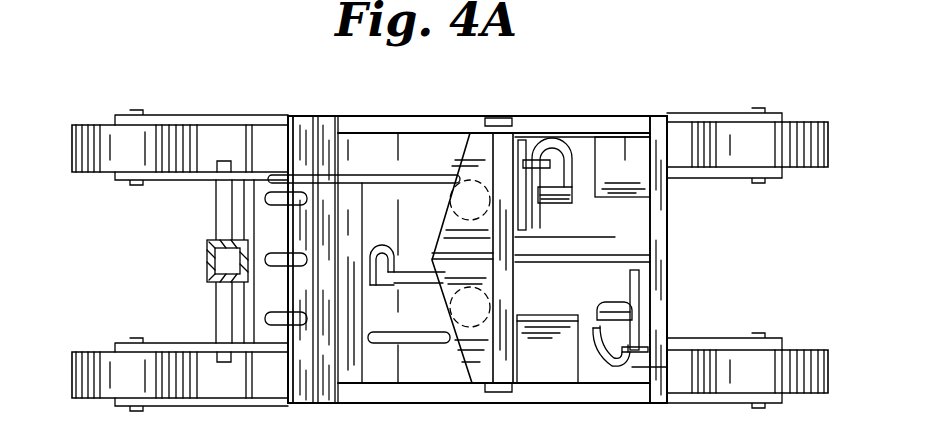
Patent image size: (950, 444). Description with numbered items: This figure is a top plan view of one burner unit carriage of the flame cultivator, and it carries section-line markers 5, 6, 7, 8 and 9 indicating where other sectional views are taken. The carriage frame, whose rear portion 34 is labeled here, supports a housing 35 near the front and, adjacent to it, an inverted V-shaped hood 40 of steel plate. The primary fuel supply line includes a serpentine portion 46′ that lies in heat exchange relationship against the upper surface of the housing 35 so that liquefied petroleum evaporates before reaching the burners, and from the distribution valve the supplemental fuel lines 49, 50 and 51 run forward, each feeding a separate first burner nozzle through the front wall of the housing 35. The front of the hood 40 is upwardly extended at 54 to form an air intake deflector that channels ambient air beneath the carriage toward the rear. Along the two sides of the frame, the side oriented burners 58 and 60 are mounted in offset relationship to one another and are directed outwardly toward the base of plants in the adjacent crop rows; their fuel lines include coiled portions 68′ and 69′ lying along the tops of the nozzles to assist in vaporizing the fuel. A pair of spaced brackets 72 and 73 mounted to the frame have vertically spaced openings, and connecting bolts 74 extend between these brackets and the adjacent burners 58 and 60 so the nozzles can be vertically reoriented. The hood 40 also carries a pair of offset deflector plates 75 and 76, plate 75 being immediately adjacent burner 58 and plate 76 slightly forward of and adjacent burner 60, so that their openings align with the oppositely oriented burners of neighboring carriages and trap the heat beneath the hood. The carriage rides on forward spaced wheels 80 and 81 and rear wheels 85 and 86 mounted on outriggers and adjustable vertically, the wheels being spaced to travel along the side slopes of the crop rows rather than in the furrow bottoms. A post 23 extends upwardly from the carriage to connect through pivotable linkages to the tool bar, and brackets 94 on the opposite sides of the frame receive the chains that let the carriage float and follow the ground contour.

The post 23 is at (207, 255).
The rear portion 34 is at (683, 283).
The housing 35 is at (325, 140).
The hood 40 is at (452, 294).
The serpentine portion 46′ is at (412, 230).
The supplemental fuel line 49 is at (266, 194).
The supplemental fuel line 50 is at (300, 258).
The supplemental fuel line 51 is at (266, 317).
The upwardly extended front portion 54 is at (472, 152).
The side oriented burner 58 is at (573, 163).
The side oriented burner 60 is at (592, 357).
The coiled portion 68′ is at (554, 138).
The coiled portion 69′ is at (624, 362).
The bracket 72 is at (522, 142).
The bracket 73 is at (650, 346).
The connecting bolt 74 is at (546, 188).
The deflector plate 75 is at (628, 138).
The deflector plate 76 is at (570, 290).
The forward wheel 80 is at (78, 372).
The forward wheel 81 is at (82, 125).
The rear wheel 85 is at (804, 349).
The rear wheel 86 is at (806, 121).
The bracket 94 is at (486, 119).
The section line 5 is at (27, 260).
The section line 6 is at (208, 112).
The section line 7 is at (398, 116).
The section line 8 is at (548, 116).
The section line 9 is at (618, 116).